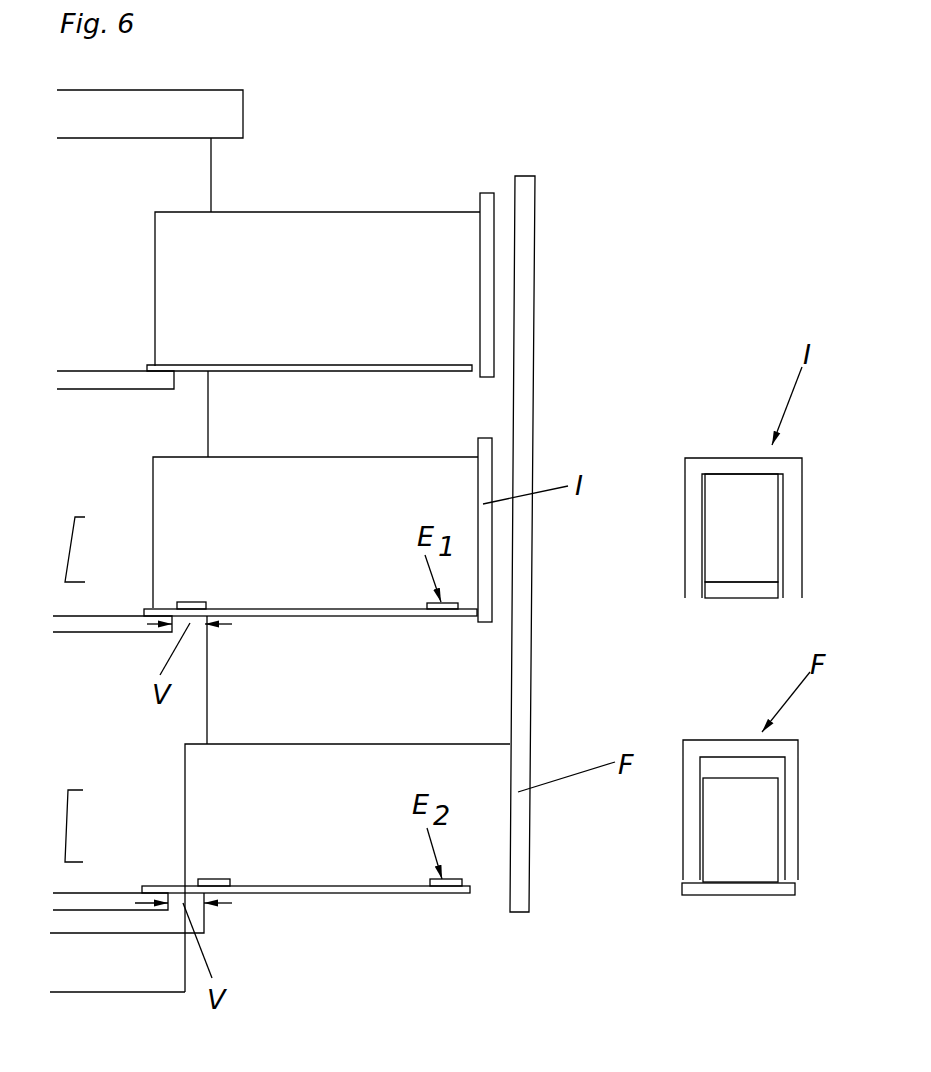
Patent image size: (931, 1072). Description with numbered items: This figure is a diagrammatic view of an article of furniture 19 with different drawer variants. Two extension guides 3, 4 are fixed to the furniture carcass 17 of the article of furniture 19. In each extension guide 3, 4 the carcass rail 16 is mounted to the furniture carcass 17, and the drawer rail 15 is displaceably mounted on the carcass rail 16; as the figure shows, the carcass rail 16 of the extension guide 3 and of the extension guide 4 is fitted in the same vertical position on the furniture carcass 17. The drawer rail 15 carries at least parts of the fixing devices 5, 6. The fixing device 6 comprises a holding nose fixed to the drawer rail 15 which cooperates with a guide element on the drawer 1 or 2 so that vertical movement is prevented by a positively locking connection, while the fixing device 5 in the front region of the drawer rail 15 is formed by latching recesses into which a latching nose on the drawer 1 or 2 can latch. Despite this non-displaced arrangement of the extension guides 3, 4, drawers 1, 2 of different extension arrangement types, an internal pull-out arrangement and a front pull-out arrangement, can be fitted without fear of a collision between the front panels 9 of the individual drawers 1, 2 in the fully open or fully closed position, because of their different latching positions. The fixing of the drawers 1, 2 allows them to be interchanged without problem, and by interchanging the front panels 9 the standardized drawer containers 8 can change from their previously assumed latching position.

The drawer 1 is at (518, 830).
The drawer 2 is at (505, 528).
The extension guide 3 is at (72, 542).
The extension guide 4 is at (68, 826).
The fixing device 5 is at (447, 608).
The fixing device 6 is at (192, 607).
The drawer container 8 is at (333, 493).
The front panel 9 is at (737, 587).
The drawer rail 15 is at (170, 613).
The carcass rail 16 is at (120, 627).
The furniture carcass 17 is at (165, 112).
The article of furniture 19 is at (417, 118).